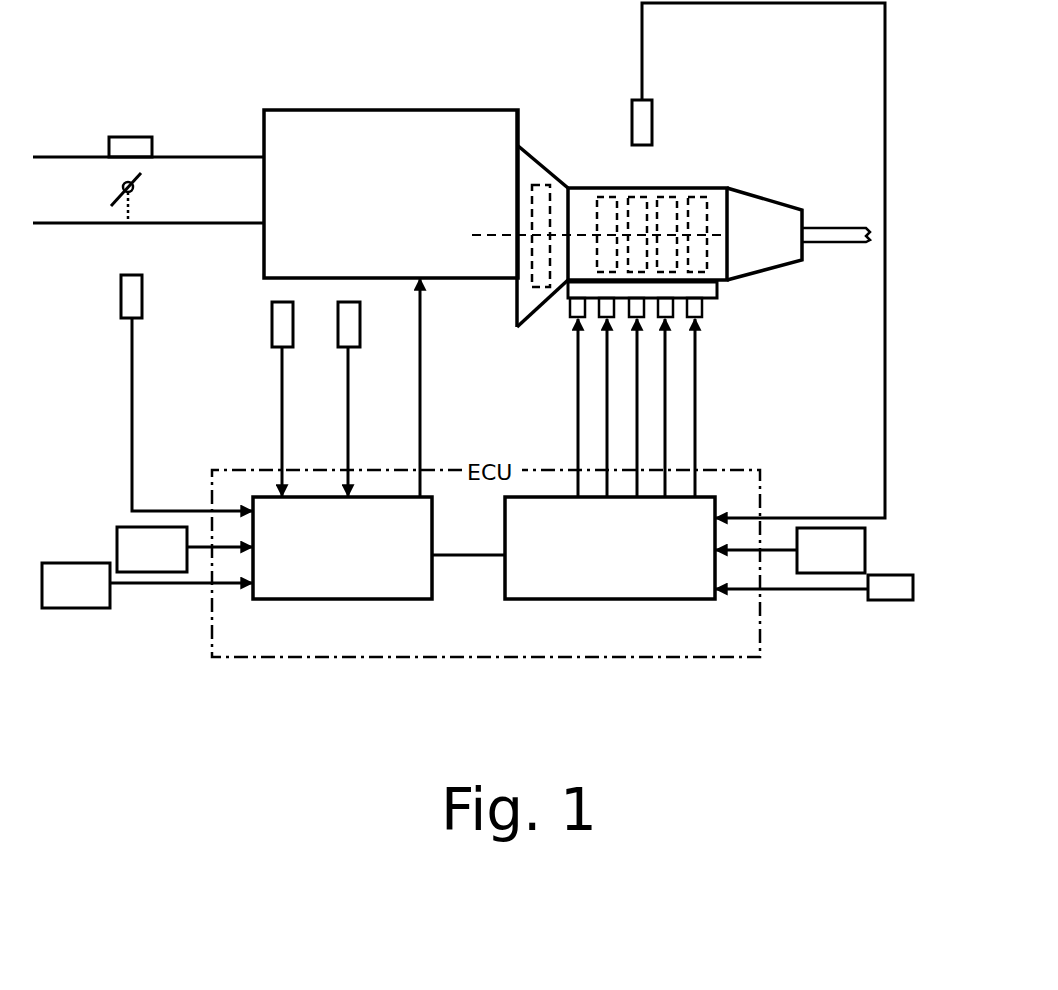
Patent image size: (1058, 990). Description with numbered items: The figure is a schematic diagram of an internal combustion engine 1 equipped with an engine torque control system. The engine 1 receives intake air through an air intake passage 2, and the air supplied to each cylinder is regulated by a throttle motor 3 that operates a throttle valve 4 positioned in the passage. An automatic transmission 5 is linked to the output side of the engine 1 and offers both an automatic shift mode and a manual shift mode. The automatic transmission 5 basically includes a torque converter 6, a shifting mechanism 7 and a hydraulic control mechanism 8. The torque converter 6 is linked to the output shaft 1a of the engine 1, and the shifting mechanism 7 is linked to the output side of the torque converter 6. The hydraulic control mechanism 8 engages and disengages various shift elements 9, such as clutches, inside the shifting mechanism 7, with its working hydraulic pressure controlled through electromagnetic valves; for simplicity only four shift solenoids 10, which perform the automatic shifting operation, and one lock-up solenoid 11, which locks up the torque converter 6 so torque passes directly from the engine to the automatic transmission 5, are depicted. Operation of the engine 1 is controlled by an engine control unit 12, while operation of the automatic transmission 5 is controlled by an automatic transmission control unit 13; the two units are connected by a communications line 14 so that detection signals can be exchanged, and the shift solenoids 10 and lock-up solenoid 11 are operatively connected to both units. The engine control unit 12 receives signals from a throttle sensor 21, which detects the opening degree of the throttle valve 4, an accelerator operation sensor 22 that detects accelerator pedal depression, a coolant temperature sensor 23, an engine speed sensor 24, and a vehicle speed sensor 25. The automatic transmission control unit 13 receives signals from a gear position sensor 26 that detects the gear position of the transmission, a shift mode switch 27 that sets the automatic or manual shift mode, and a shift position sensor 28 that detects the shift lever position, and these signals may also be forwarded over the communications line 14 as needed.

The internal combustion engine 1 is at (391, 196).
The output shaft 1a is at (573, 204).
The air intake passage 2 is at (148, 166).
The throttle motor 3 is at (148, 128).
The throttle valve 4 is at (98, 166).
The automatic transmission 5 is at (756, 111).
The torque converter 6 is at (548, 225).
The shifting mechanism 7 is at (719, 212).
The hydraulic control mechanism 8 is at (717, 290).
The shift elements 9 is at (652, 194).
The shift solenoids 10 is at (668, 318).
The lock-up solenoid 11 is at (561, 397).
The engine control unit 12 is at (346, 574).
The automatic transmission control unit 13 is at (610, 574).
The communications line 14 is at (469, 603).
The throttle sensor 21 is at (186, 393).
The accelerator operation sensor 22 is at (147, 610).
The coolant temperature sensor 23 is at (309, 399).
The engine speed sensor 24 is at (374, 399).
The vehicle speed sensor 25 is at (155, 538).
The gear position sensor 26 is at (758, 260).
The shift mode switch 27 is at (816, 617).
The shift position sensor 28 is at (820, 550).